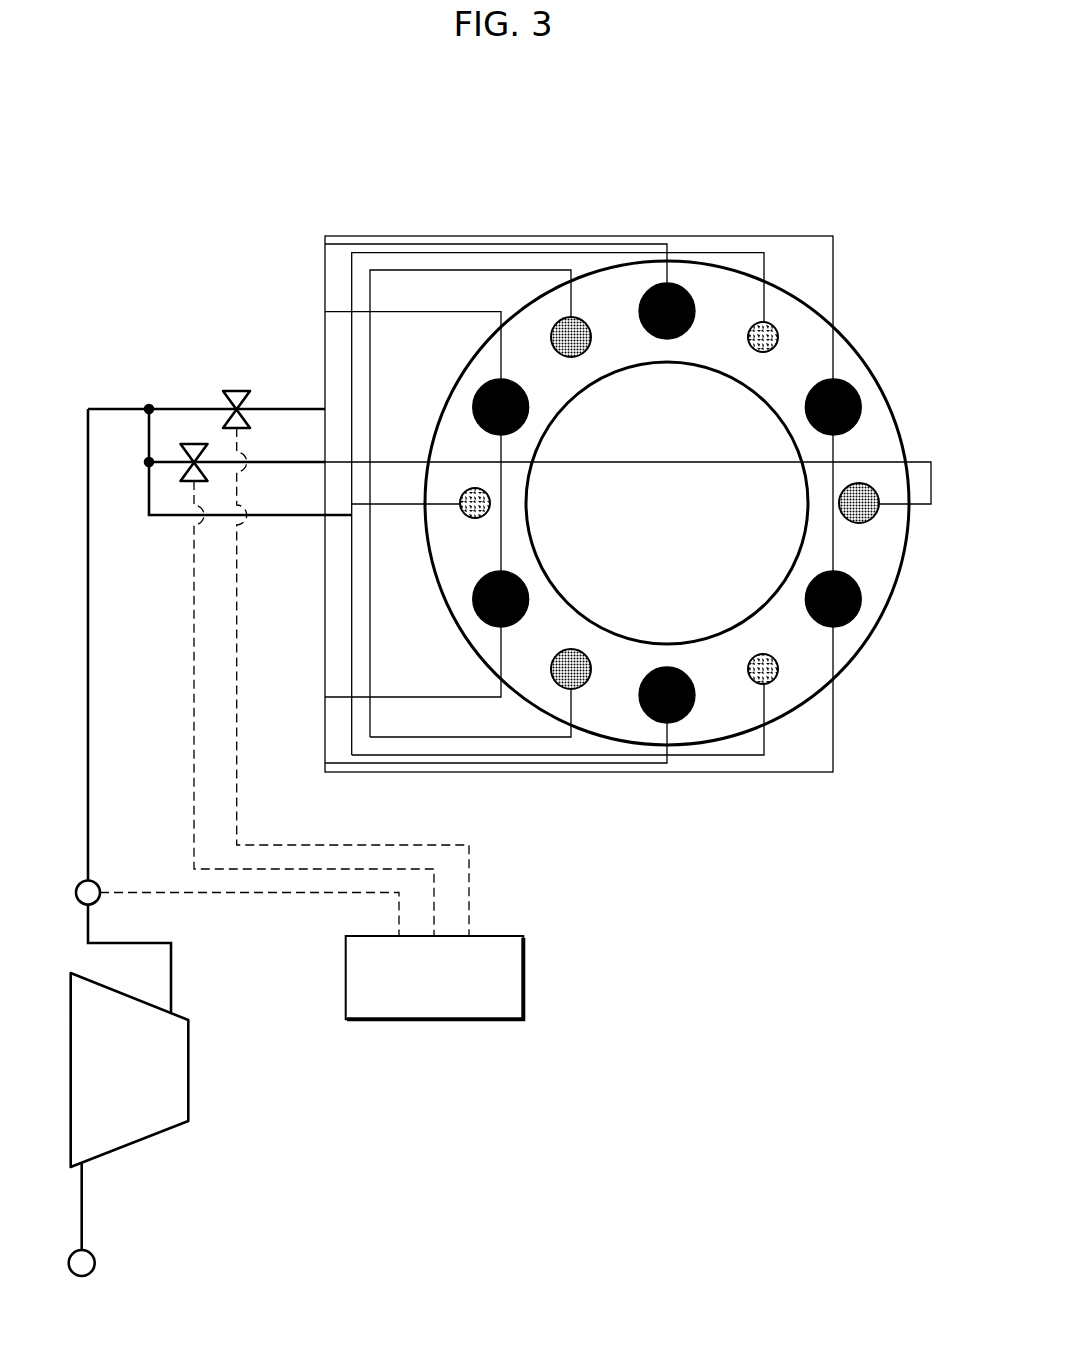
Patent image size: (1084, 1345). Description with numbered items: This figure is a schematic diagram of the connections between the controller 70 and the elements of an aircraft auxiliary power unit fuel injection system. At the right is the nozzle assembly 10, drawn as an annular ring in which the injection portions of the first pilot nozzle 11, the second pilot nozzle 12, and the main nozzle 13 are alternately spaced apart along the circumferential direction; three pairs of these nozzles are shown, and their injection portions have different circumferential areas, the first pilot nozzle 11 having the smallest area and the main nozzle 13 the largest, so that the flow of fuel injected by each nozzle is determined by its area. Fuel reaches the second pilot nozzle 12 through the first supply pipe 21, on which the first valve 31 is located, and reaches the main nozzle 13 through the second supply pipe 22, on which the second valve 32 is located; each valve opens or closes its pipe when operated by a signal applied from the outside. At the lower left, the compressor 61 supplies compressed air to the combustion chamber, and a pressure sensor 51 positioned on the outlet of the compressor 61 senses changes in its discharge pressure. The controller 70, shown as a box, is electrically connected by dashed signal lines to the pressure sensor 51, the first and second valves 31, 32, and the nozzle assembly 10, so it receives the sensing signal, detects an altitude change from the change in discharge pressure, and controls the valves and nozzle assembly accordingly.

The nozzle assembly 10 is at (667, 439).
The first pilot nozzle 11 is at (582, 174).
The second pilot nozzle 12 is at (586, 322).
The main nozzle 13 is at (687, 290).
The first supply pipe 21 is at (167, 458).
The second supply pipe 22 is at (210, 408).
The first valve 31 is at (193, 446).
The second valve 32 is at (242, 391).
The pressure sensor 51 is at (97, 882).
The compressor 61 is at (145, 1138).
The controller 70 is at (525, 977).